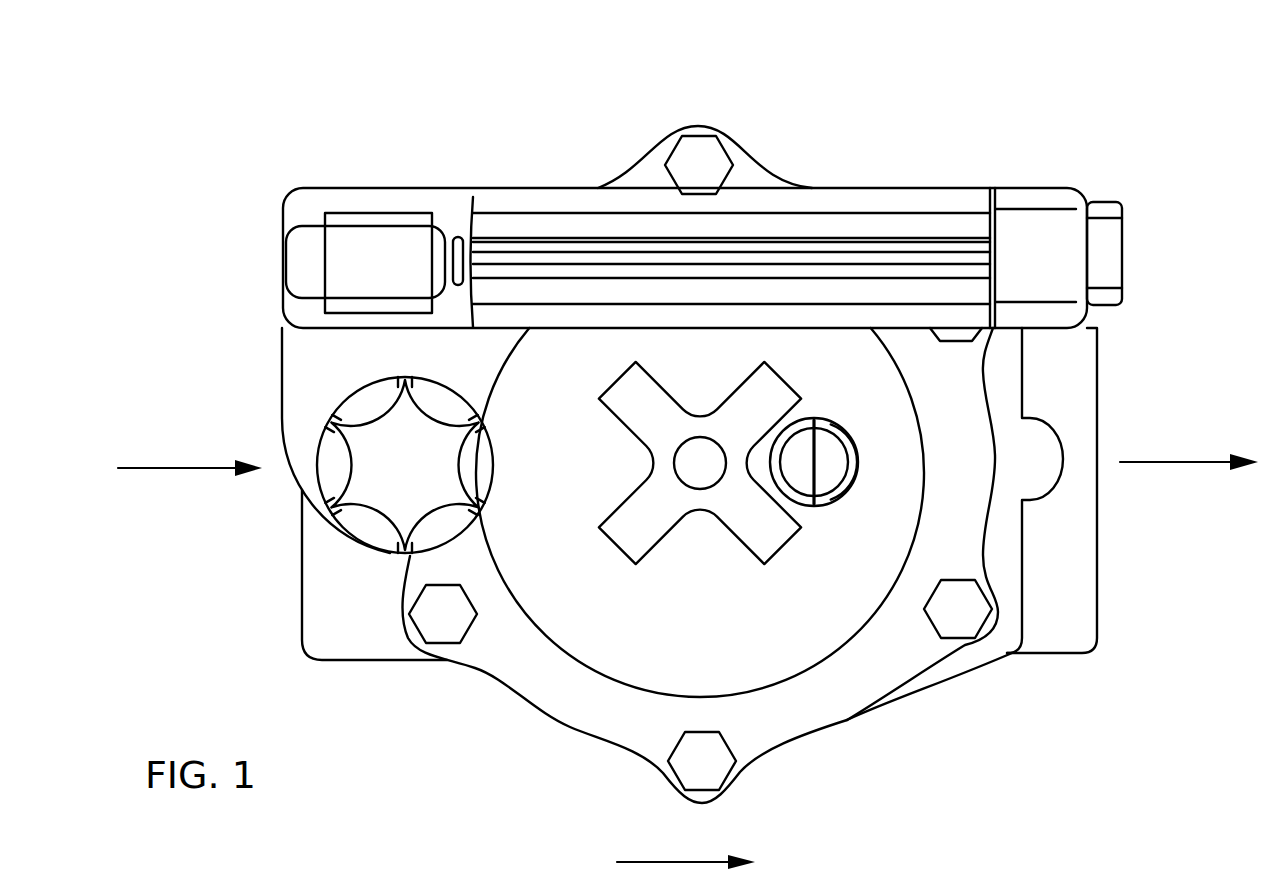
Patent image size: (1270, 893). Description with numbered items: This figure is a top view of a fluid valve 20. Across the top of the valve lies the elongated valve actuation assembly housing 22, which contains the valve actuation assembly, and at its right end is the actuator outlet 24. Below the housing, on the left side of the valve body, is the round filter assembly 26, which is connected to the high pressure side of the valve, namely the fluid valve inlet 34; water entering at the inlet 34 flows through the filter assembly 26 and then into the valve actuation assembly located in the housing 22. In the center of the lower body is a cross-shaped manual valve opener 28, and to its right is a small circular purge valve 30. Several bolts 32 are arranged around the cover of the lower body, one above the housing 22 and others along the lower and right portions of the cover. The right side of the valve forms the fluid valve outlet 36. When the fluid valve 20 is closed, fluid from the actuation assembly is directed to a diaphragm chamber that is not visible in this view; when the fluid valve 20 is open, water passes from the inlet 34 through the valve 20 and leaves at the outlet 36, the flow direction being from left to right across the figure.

The fluid valve 20 is at (876, 116).
The valve actuation assembly housing 22 is at (955, 186).
The actuator outlet 24 is at (1126, 237).
The filter assembly 26 is at (393, 443).
The manual valve opener 28 is at (651, 523).
The purge valve 30 is at (830, 432).
The bolts 32 is at (705, 158).
The fluid valve inlet 34 is at (302, 552).
The fluid valve outlet 36 is at (1099, 493).